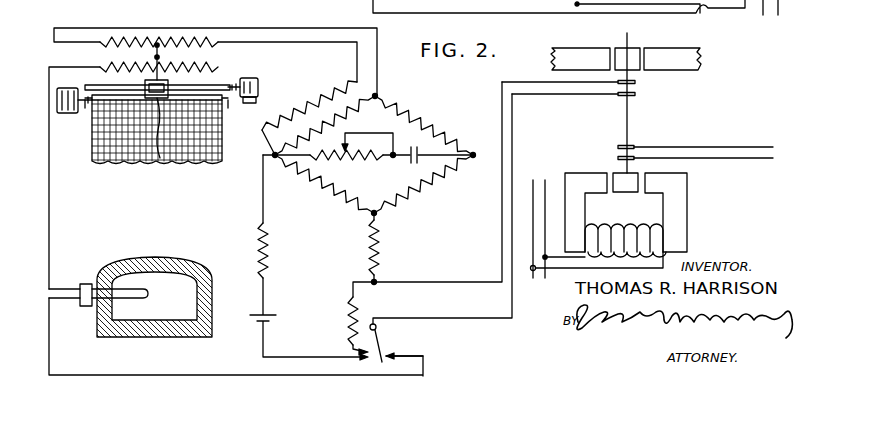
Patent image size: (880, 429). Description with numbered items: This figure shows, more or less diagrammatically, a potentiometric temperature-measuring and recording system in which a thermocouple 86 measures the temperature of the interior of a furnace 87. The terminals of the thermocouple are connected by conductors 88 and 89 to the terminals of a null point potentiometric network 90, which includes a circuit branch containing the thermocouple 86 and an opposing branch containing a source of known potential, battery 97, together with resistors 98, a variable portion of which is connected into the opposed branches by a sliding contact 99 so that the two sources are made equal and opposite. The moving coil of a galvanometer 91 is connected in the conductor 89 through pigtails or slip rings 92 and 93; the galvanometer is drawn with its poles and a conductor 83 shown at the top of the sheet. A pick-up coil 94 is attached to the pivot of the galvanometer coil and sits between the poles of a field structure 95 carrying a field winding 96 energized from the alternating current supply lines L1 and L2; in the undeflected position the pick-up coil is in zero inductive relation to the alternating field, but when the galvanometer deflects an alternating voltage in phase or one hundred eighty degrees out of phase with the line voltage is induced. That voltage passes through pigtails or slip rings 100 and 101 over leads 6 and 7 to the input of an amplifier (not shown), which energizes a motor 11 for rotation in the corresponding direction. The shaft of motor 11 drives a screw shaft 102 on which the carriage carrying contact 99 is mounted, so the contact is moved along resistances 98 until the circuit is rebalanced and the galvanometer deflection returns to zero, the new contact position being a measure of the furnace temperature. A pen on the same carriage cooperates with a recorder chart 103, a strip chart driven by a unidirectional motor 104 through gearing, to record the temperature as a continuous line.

The connecting conductor 83 is at (445, 13).
The resistors 98 is at (107, 68).
The sliding contact 99 is at (157, 57).
The screw shaft 102 is at (228, 84).
The motor 11 is at (260, 92).
The unidirectional motor 104 is at (62, 112).
The recorder chart 103 is at (160, 152).
The null point potentiometric network 90 is at (390, 128).
The battery 97 is at (410, 166).
The conductor 88 is at (49, 218).
The furnace 87 is at (157, 261).
The thermocouple 86 is at (146, 294).
The conductor 89 is at (178, 373).
The galvanometer 91 is at (748, 50).
The pigtail or slip ring 93 is at (636, 82).
The pigtail or slip ring 92 is at (636, 94).
The pigtail or slip ring 100 is at (617, 147).
The pigtail or slip ring 101 is at (617, 158).
The conductor 6 is at (768, 147).
The conductor 7 is at (768, 158).
The pick-up coil 94 is at (628, 194).
The field structure 95 is at (687, 197).
The field winding 96 is at (628, 230).
The alternating current supply line L1 is at (533, 190).
The alternating current supply line L2 is at (545, 194).